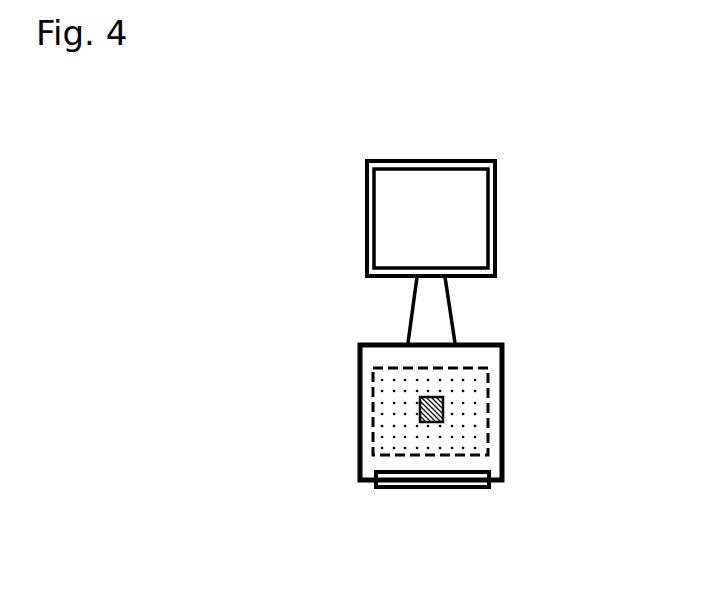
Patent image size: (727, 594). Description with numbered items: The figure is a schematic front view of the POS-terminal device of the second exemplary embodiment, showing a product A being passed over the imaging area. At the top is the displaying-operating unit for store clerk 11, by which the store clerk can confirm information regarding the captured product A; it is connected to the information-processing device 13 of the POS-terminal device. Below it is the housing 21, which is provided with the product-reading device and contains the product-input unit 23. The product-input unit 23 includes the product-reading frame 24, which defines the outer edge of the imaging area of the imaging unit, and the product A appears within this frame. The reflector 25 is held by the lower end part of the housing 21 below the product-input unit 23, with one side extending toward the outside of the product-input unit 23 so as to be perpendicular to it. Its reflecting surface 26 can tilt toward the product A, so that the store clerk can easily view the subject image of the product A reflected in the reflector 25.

The displaying-operating unit for store clerk 11 is at (475, 193).
The information-processing device 13 is at (422, 321).
The housing 21 is at (361, 481).
The product-input unit 23 is at (383, 393).
The product-reading frame 24 is at (375, 437).
The reflector 25 is at (457, 478).
The reflecting surface 26 is at (463, 468).
The product A is at (441, 398).